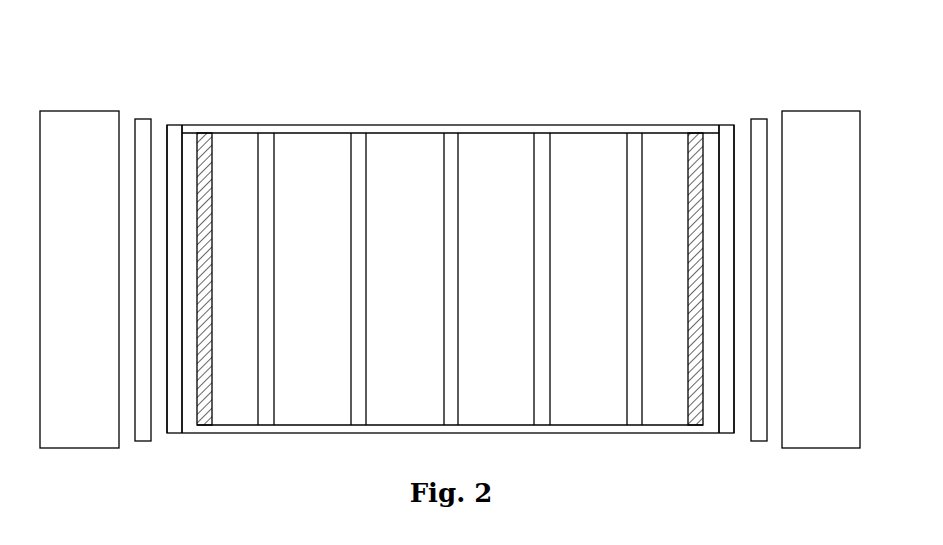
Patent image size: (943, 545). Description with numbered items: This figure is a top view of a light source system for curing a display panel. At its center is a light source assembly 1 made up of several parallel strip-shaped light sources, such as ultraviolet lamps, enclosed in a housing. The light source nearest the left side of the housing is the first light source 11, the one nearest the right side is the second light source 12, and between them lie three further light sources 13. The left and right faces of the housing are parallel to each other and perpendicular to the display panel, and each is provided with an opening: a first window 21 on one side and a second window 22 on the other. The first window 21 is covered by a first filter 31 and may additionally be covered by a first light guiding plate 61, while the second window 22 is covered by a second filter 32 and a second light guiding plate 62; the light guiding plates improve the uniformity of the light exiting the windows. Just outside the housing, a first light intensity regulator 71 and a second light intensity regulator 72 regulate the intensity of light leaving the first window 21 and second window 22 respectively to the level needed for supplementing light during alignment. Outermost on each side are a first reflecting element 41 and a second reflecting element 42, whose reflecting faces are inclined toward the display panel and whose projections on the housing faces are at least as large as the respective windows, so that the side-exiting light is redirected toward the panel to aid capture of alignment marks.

The light source assembly 1 is at (263, 62).
The first light source 11 is at (266, 172).
The second light source 12 is at (635, 172).
The light source 13 is at (358, 172).
The first window 21 is at (205, 133).
The second window 22 is at (695, 133).
The first filter 31 is at (189, 172).
The second filter 32 is at (712, 172).
The first reflecting element 41 is at (79, 172).
The second reflecting element 42 is at (822, 172).
The first light guiding plate 61 is at (177, 172).
The second light guiding plate 62 is at (727, 172).
The first light intensity regulator 71 is at (143, 172).
The second light intensity regulator 72 is at (759, 172).